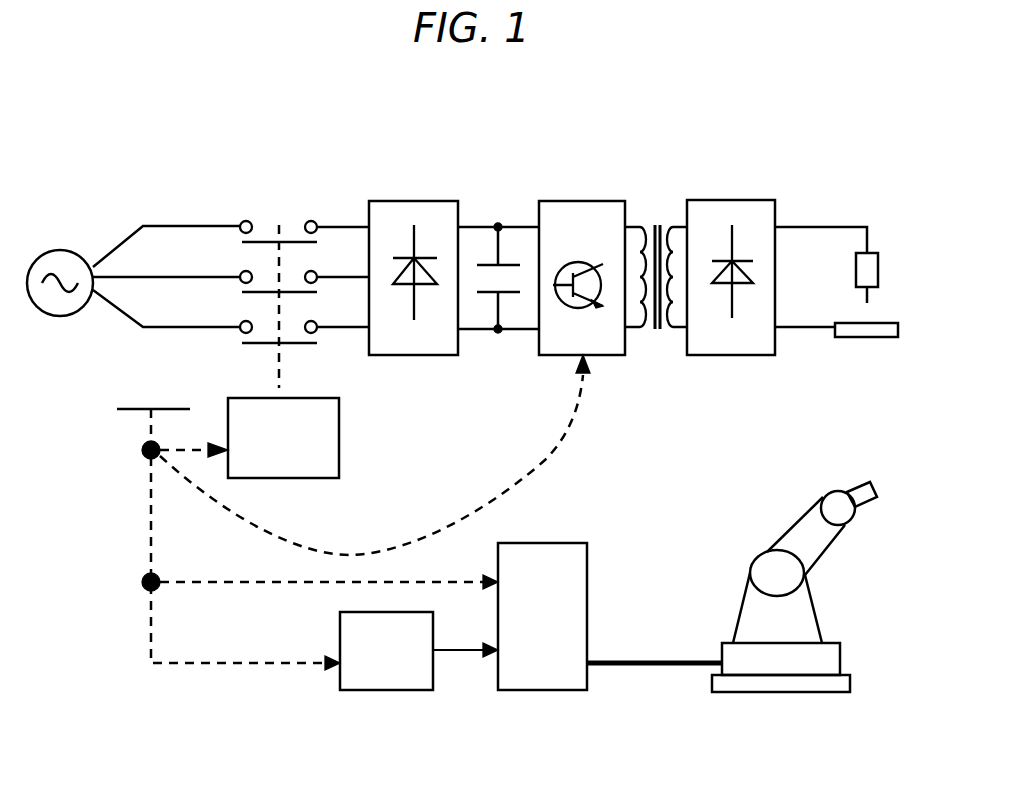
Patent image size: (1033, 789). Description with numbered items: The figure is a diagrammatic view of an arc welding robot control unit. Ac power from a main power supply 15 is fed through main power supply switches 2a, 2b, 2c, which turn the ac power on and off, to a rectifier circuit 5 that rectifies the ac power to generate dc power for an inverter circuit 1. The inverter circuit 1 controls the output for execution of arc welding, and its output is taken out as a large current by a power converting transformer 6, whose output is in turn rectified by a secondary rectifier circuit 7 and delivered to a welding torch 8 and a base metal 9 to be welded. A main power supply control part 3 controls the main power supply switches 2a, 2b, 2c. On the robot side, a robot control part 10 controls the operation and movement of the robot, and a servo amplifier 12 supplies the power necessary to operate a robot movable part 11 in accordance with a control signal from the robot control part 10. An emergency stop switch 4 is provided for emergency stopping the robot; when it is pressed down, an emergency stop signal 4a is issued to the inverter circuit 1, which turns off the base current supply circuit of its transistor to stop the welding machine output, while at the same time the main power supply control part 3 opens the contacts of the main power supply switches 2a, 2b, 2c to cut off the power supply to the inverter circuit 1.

The inverter circuit 1 is at (592, 217).
The main power supply switch 2a is at (303, 347).
The main power supply switch 2b is at (271, 290).
The main power supply switch 2c is at (294, 242).
The main power supply control part 3 is at (313, 463).
The emergency stop switch 4 is at (137, 423).
The emergency stop signal 4a is at (543, 470).
The rectifier circuit 5 is at (415, 215).
The power converting transformer 6 is at (668, 345).
The secondary rectifier circuit 7 is at (705, 218).
The welding torch 8 is at (857, 253).
The base metal 9 is at (863, 331).
The robot control part 10 is at (388, 662).
The robot movable part 11 is at (803, 530).
The servo amplifier 12 is at (565, 650).
The main power supply 15 is at (77, 252).